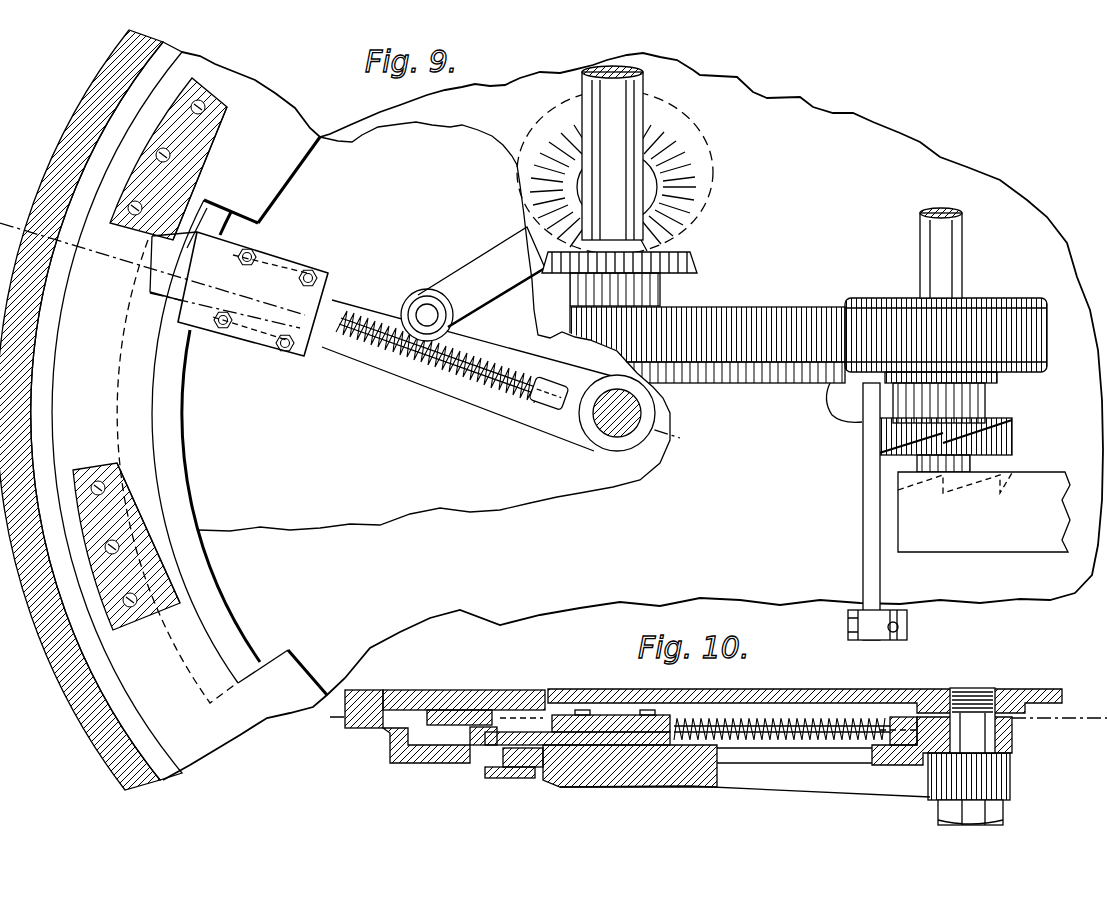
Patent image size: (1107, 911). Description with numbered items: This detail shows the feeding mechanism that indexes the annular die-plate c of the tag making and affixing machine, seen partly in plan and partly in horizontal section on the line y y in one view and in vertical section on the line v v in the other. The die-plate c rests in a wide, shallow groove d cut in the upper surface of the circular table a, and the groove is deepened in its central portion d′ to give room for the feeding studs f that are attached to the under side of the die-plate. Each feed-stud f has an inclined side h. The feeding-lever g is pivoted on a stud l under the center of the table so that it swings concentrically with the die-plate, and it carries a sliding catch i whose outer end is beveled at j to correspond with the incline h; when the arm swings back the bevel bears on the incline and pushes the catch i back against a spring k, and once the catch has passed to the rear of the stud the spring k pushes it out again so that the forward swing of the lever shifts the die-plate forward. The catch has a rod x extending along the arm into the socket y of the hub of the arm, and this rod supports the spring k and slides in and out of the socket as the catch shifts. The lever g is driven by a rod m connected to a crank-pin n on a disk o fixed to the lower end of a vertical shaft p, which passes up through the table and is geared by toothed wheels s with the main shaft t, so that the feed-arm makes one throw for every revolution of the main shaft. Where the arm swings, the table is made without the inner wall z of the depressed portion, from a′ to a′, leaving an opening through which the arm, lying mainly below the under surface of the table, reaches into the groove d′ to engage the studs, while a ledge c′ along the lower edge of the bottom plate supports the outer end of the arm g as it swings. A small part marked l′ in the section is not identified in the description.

In FIG. 9, the circular table a is at (633, 416).
In FIG. 10, the circular table a is at (753, 688).
In FIG. 9, the end of inner-wall opening a′ is at (228, 209).
In FIG. 9, the inner wall z is at (298, 200).
In FIG. 9, the disk o is at (515, 200).
In FIG. 9, the groove d is at (103, 750).
In FIG. 10, the groove d is at (377, 733).
In FIG. 9, the deepened central portion of groove d′ is at (230, 727).
In FIG. 10, the deepened central portion of groove d′ is at (430, 735).
In FIG. 9, the annular die-plate c is at (177, 471).
In FIG. 10, the annular die-plate c is at (417, 690).
In FIG. 9, the ledge c′ is at (206, 441).
In FIG. 10, the ledge c′ is at (515, 780).
In FIG. 9, the feeding stud f is at (150, 354).
In FIG. 10, the feeding stud f is at (473, 733).
In FIG. 9, the inclined side h is at (200, 170).
In FIG. 9, the sliding catch i is at (180, 275).
In FIG. 10, the sliding catch i is at (542, 742).
In FIG. 9, the bevel of catch j is at (153, 263).
In FIG. 9, the section line v v is at (45, 230).
In FIG. 10, the section line v v is at (602, 722).
In FIG. 9, the feeding-lever g is at (453, 383).
In FIG. 10, the feeding-lever g is at (787, 777).
In FIG. 9, the spring k is at (503, 387).
In FIG. 10, the spring k is at (779, 753).
In FIG. 9, the rod x is at (413, 353).
In FIG. 10, the rod x is at (750, 733).
In FIG. 9, the stud l is at (612, 420).
In FIG. 10, the stud l is at (967, 735).
In FIG. 9, the rod m is at (481, 277).
In FIG. 9, the crank-pin n is at (657, 160).
In FIG. 9, the toothed wheels s is at (660, 203).
In FIG. 9, the main shaft t is at (612, 153).
In FIG. 9, the vertical shaft p is at (610, 193).
In FIG. 10, the socket of arm hub y is at (885, 767).
In FIG. 10, the clamp piece l′ is at (473, 752).